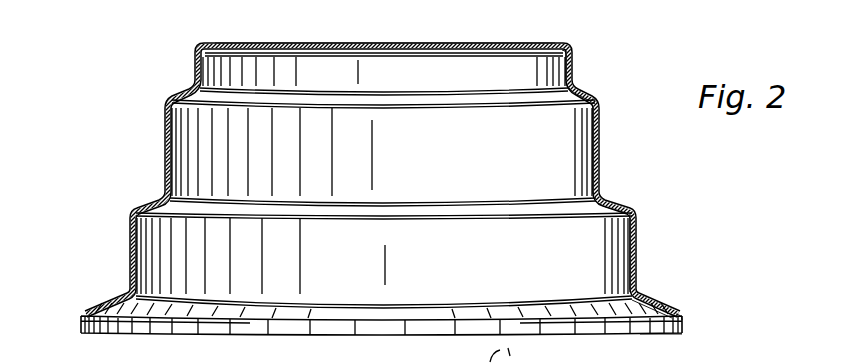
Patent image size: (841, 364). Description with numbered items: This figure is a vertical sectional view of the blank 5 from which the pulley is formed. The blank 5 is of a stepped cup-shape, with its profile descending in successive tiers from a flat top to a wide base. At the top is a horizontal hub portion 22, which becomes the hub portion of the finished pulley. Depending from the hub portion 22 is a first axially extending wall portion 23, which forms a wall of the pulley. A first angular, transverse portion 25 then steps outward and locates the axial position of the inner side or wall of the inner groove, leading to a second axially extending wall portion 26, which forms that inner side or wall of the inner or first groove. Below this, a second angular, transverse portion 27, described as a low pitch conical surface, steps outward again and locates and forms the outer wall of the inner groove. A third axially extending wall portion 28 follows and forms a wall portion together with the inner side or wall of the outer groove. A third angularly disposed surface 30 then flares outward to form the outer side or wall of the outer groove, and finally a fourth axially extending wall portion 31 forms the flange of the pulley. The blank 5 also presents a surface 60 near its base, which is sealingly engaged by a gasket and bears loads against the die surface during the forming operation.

The blank 5 is at (608, 152).
The horizontal hub portion 22 is at (473, 44).
The first axially extending wall portion 23 is at (573, 70).
The first angular, transverse portion 25 is at (581, 96).
The second axially extending wall portion 26 is at (600, 126).
The second angular, transverse portion 27 is at (613, 209).
The third axially extending wall portion 28 is at (637, 247).
The third angularly disposed surface 30 is at (656, 314).
The fourth axially extending wall portion 31 is at (683, 328).
The surface 60 is at (652, 324).